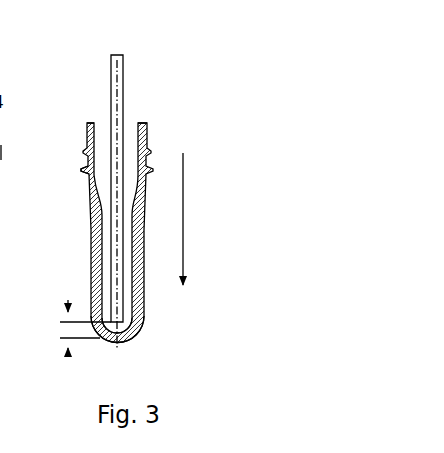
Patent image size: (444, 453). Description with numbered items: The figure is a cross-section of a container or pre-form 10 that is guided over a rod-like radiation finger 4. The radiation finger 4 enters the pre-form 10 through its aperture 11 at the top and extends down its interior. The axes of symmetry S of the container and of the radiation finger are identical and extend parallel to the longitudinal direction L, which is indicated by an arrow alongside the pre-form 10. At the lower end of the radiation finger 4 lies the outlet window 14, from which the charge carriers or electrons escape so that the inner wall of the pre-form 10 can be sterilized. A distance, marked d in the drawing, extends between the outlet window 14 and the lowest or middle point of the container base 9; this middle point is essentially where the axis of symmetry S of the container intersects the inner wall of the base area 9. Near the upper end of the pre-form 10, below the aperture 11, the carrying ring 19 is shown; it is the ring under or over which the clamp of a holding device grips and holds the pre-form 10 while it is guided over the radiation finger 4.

The radiation finger 4 is at (120, 94).
The pre-form 10 is at (66, 255).
The aperture 11 is at (99, 122).
The carrying ring 19 is at (85, 171).
The outlet window 14 is at (133, 334).
The container base 9 is at (110, 345).
The axis of symmetry S is at (116, 123).
The longitudinal direction L is at (185, 190).
The wall thickness at bottom d is at (84, 328).